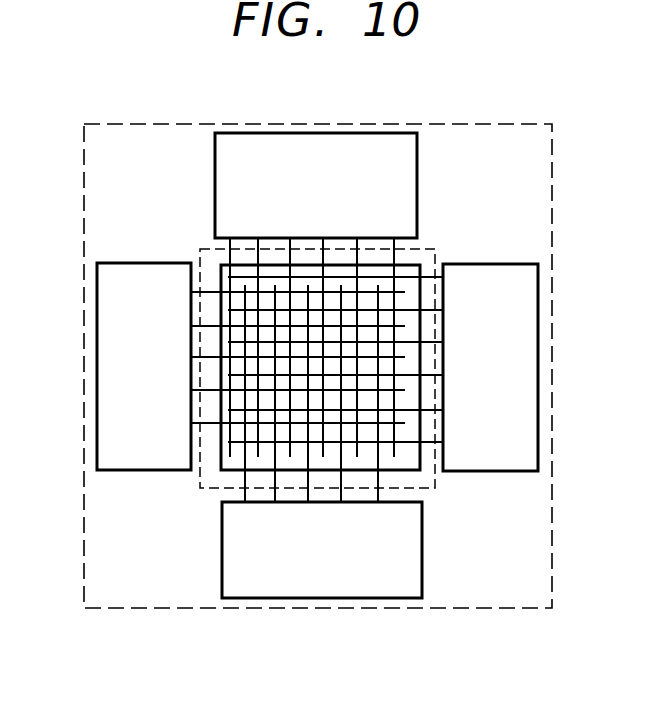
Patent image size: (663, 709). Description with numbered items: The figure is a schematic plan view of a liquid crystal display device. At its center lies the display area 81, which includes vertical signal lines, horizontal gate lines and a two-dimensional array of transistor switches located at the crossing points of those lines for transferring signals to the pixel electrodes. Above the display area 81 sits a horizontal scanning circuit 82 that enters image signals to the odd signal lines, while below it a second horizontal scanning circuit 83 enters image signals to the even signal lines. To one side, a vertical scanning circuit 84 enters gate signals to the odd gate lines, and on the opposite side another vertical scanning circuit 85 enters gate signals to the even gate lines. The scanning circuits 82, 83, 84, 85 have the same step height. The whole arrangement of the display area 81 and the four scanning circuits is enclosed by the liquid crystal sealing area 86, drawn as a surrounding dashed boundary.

The display area 81 is at (305, 290).
The horizontal scanning circuit 82 is at (243, 142).
The horizontal scanning circuit 83 is at (261, 587).
The vertical scanning circuit 84 is at (527, 340).
The vertical scanning circuit 85 is at (113, 320).
The liquid crystal sealing area 86 is at (476, 145).